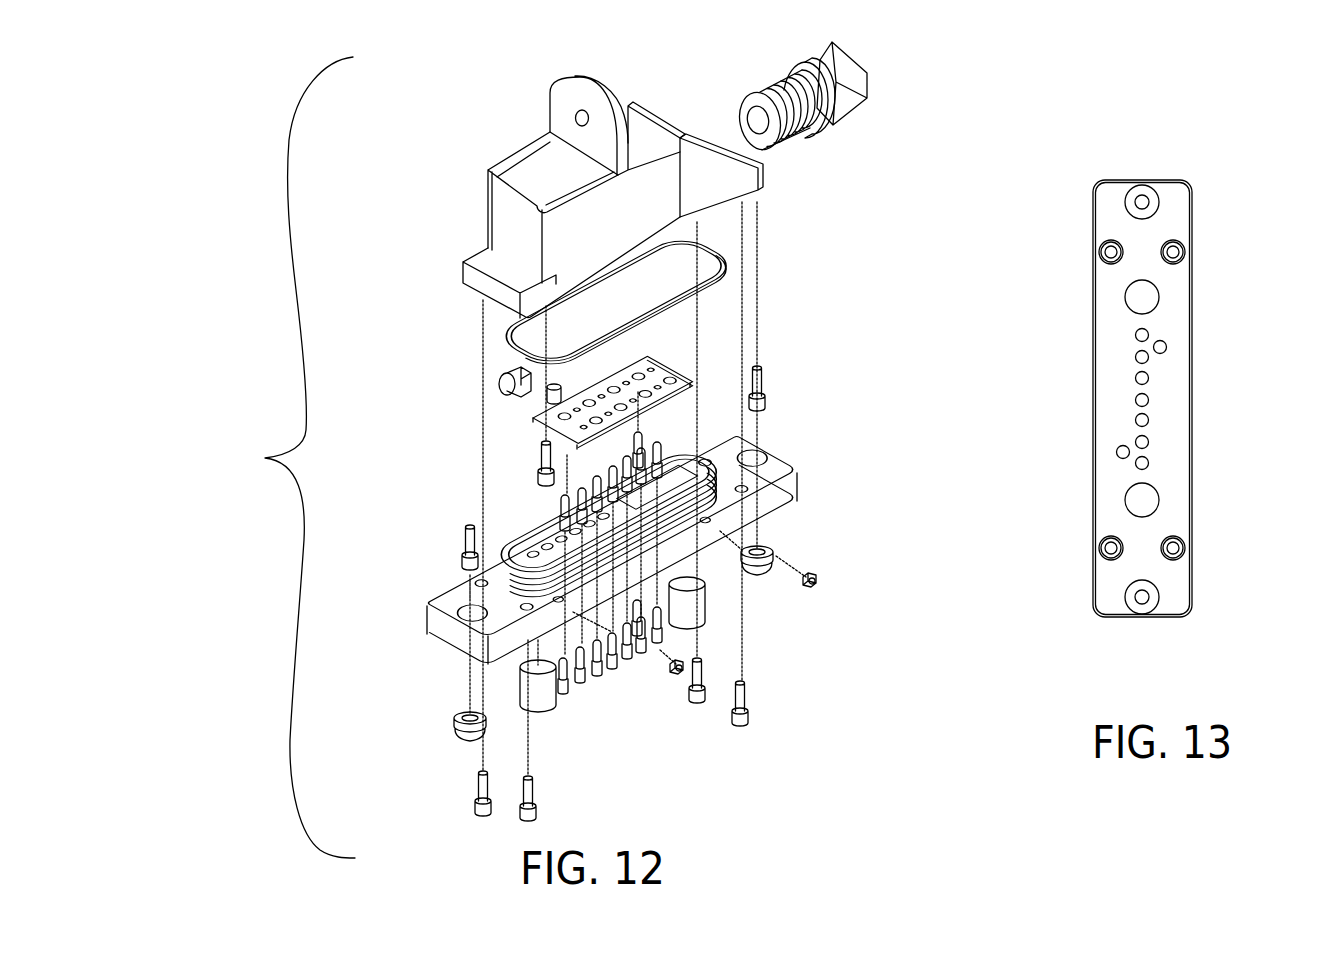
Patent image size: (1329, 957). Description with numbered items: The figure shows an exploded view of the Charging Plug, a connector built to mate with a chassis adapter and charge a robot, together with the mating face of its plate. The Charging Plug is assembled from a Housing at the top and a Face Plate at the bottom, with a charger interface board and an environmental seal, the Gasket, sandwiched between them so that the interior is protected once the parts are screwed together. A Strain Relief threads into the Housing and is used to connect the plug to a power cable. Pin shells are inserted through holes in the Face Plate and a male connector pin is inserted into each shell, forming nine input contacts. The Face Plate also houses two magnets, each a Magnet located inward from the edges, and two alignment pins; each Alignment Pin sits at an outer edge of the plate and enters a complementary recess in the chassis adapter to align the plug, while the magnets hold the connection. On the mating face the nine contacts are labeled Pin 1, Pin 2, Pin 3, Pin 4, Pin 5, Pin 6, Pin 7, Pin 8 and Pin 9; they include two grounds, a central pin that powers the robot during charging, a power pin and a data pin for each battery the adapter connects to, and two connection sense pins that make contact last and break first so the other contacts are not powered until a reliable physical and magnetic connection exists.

In FIG. 12, the charging plug Charging Plug is at (260, 457).
In FIG. 12, the housing Housing is at (522, 148).
In FIG. 12, the strain relief Strain Relief is at (868, 98).
In FIG. 12, the environmental seal Gasket is at (497, 344).
In FIG. 12, the face plate Face Plate is at (798, 474).
In FIG. 12, the alignment pin Alignment Pin is at (780, 553).
In FIG. 13, the alignment pin Alignment Pin is at (1140, 193).
In FIG. 12, the magnet Magnet is at (706, 602).
In FIG. 13, the magnet Magnet is at (1145, 300).
In FIG. 13, the input contact pin Pin 1 is at (1150, 465).
In FIG. 13, the input contact pin Pin 2 is at (1150, 445).
In FIG. 13, the input contact pin Pin 3 is at (1135, 420).
In FIG. 13, the input contact pin Pin 4 is at (1135, 400).
In FIG. 13, the input contact pin Pin 5 is at (1135, 378).
In FIG. 13, the input contact pin Pin 6 is at (1135, 357).
In FIG. 13, the input contact pin Pin 7 is at (1135, 335).
In FIG. 13, the input contact pin Pin 8 is at (1162, 345).
In FIG. 13, the input contact pin Pin 9 is at (1116, 452).